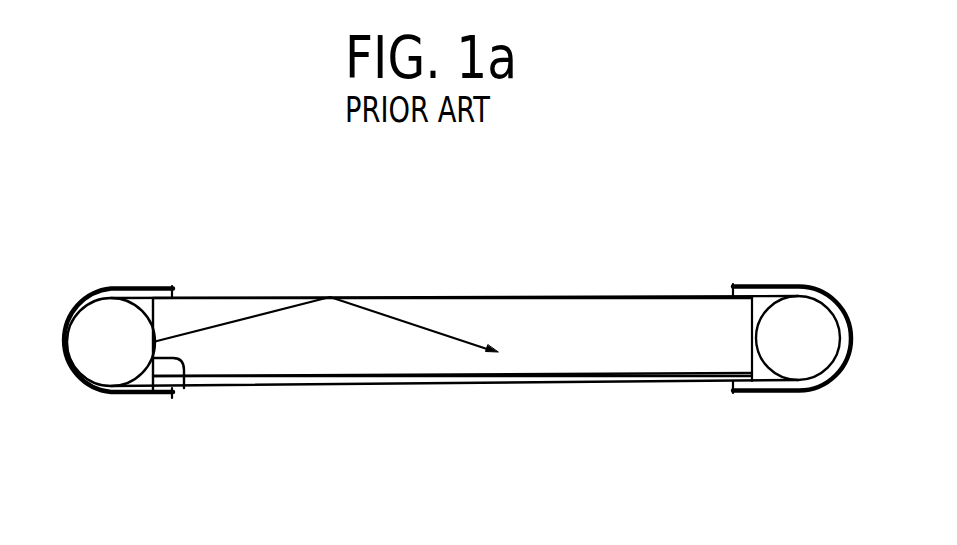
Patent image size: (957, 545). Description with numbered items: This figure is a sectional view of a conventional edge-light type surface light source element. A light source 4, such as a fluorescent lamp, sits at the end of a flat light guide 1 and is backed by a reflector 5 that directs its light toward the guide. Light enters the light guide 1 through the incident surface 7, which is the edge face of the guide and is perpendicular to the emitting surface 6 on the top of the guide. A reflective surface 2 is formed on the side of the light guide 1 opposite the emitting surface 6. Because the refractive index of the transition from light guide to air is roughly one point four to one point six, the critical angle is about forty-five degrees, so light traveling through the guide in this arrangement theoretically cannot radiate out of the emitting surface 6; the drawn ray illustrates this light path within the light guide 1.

The light guide 1 is at (687, 324).
The reflective surface 2 is at (530, 385).
The light source 4 is at (92, 358).
The reflector 5 is at (75, 300).
The emitting surface 6 is at (600, 296).
The incident surface 7 is at (185, 386).